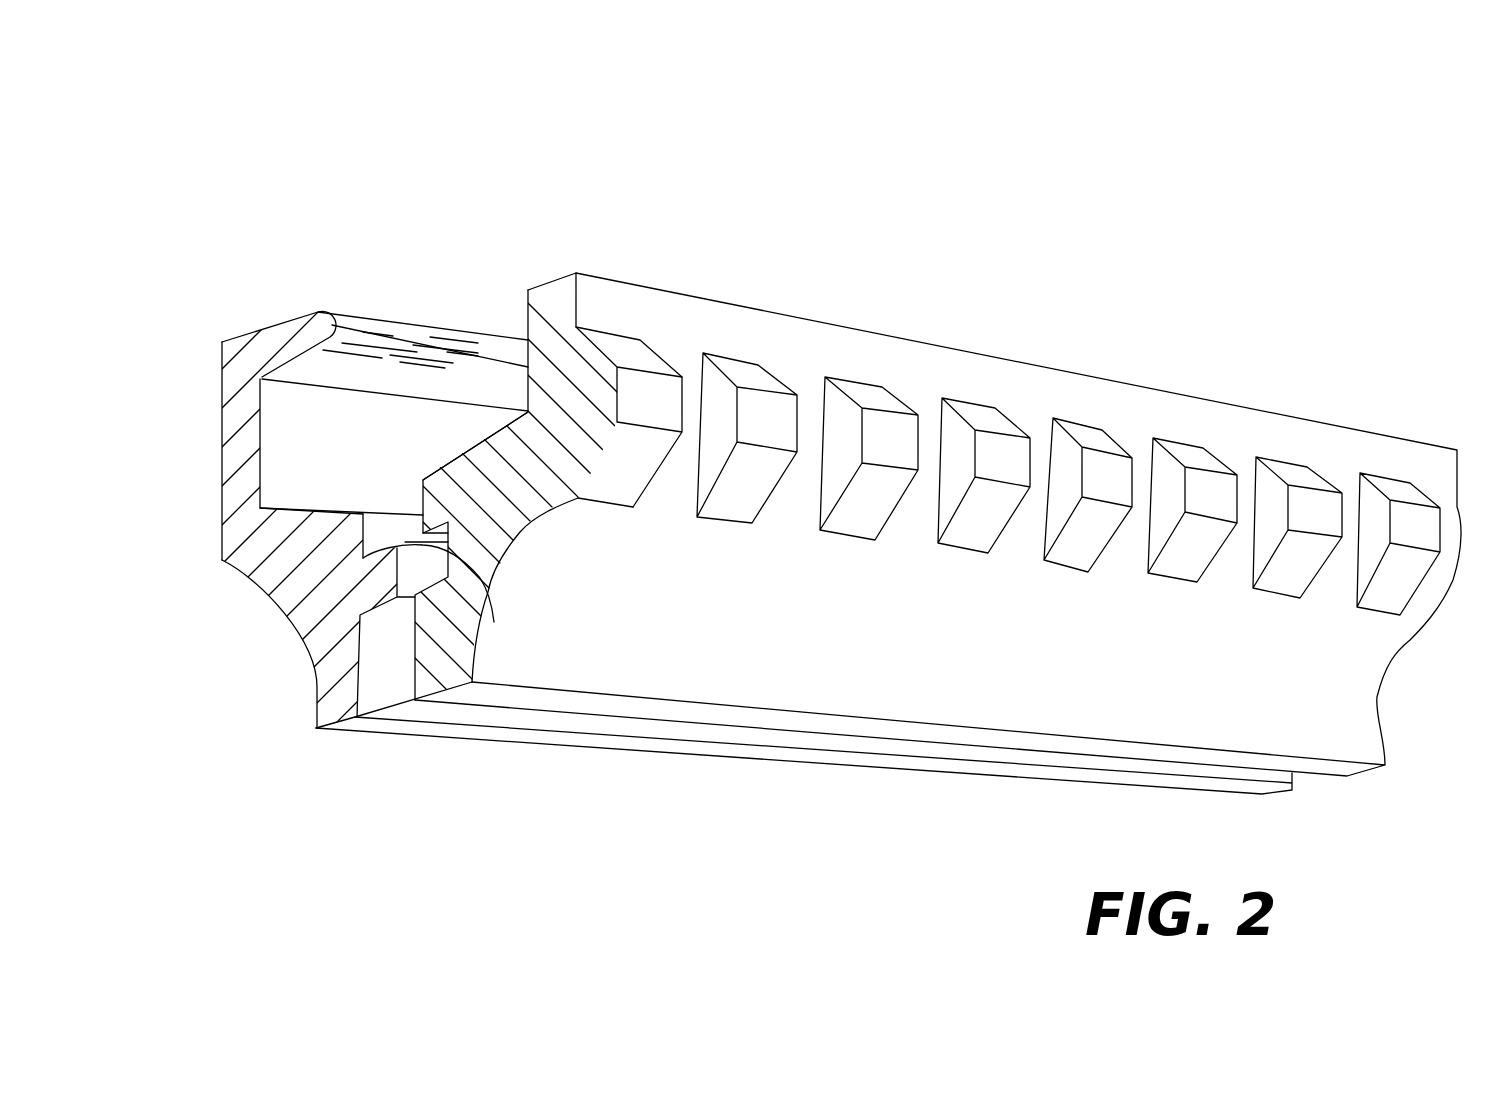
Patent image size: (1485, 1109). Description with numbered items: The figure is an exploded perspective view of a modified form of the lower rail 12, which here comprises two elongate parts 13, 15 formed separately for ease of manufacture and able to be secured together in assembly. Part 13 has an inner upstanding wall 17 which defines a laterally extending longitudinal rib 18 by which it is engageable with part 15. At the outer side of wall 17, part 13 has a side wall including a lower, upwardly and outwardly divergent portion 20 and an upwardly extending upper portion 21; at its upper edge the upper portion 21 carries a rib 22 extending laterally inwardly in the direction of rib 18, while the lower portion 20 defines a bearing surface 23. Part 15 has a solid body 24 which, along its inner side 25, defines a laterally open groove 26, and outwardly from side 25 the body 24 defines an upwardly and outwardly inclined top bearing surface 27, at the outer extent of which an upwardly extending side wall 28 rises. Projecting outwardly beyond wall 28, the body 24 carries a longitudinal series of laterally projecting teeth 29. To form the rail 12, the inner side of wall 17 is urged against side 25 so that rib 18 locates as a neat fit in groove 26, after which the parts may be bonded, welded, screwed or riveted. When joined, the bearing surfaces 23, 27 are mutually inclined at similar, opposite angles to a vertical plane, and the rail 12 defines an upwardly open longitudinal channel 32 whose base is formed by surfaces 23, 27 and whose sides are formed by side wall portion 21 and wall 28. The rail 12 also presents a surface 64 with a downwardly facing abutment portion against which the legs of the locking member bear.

The lower rail 12 is at (205, 290).
The part 13 is at (265, 600).
The part 15 is at (770, 304).
The inner upstanding wall 17 is at (328, 653).
The longitudinal rib 18 is at (417, 558).
The lower divergent portion 20 is at (257, 557).
The upper portion 21 is at (222, 436).
The rib 22 is at (402, 333).
The bearing surface 23 is at (278, 503).
The solid body 24 is at (535, 507).
The inner side 25 is at (413, 658).
The laterally open groove 26 is at (496, 590).
The top bearing surface 27 is at (472, 435).
The side wall 28 is at (563, 297).
The teeth 29 is at (755, 498).
The longitudinal channel 32 is at (288, 404).
The surface 64 is at (735, 600).